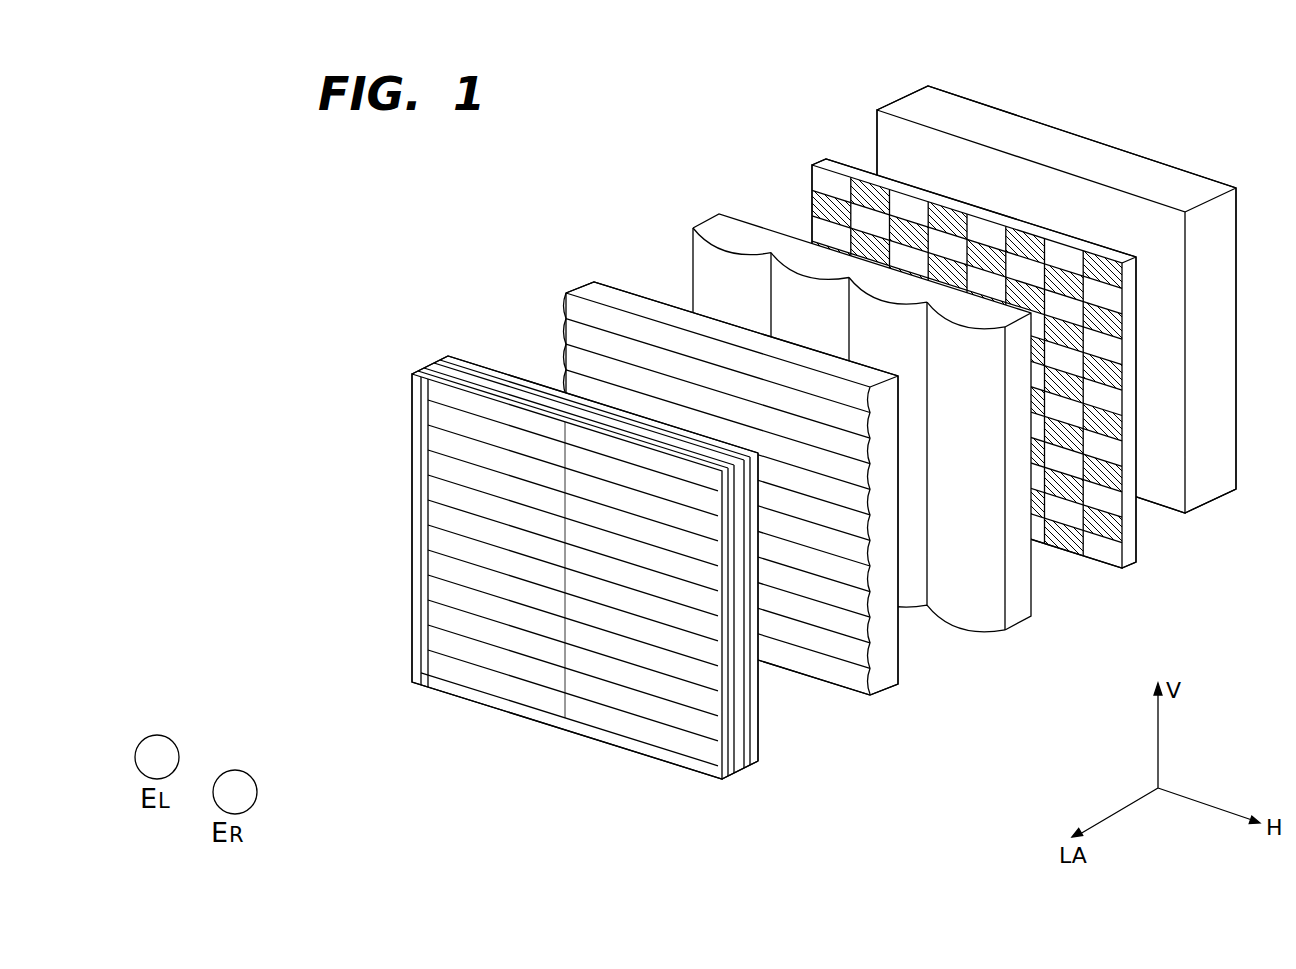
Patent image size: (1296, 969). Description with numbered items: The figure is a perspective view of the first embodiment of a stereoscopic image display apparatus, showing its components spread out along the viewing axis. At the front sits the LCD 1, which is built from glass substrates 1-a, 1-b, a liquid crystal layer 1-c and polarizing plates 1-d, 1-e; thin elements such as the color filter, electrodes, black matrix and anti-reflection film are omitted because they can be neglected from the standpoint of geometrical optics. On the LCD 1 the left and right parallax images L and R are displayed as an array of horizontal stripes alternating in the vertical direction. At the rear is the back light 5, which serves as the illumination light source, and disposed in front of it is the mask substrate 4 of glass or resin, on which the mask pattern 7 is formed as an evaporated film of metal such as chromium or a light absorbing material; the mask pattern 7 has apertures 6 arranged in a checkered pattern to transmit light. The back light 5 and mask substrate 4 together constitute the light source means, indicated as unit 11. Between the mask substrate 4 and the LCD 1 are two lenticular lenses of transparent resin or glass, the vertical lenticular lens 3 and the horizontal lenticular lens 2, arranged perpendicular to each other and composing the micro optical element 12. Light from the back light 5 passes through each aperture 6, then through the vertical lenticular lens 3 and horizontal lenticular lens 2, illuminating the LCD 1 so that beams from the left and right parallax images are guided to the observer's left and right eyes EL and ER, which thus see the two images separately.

The LCD 1 is at (418, 373).
The glass substrate 1-a is at (737, 777).
The glass substrate 1-b is at (752, 768).
The liquid crystal layer 1-c is at (744, 774).
The polarizing plate 1-d is at (730, 778).
The polarizing plate 1-e is at (758, 756).
The horizontal lenticular lens 2 is at (567, 305).
The vertical lenticular lens 3 is at (710, 222).
The mask substrate 4 is at (829, 160).
The back light 5 is at (898, 98).
The aperture 6 is at (823, 188).
The mask pattern 7 is at (1130, 553).
The light source unit 11 is at (856, 12).
The micro optical element 12 is at (619, 171).